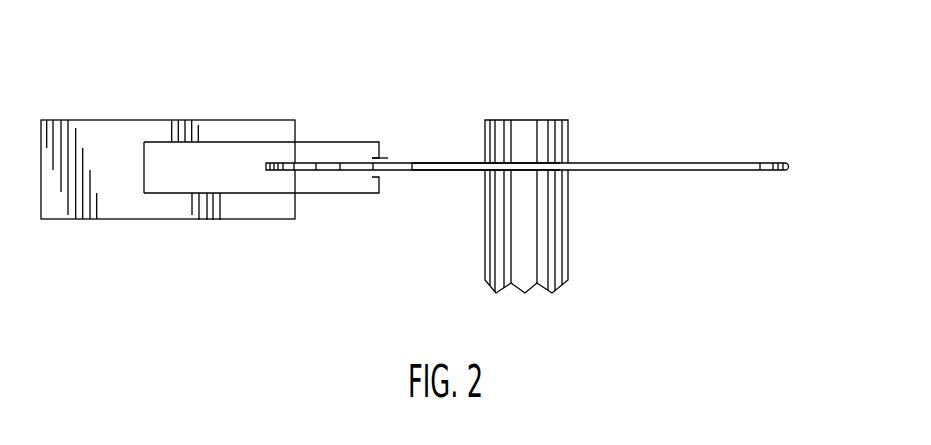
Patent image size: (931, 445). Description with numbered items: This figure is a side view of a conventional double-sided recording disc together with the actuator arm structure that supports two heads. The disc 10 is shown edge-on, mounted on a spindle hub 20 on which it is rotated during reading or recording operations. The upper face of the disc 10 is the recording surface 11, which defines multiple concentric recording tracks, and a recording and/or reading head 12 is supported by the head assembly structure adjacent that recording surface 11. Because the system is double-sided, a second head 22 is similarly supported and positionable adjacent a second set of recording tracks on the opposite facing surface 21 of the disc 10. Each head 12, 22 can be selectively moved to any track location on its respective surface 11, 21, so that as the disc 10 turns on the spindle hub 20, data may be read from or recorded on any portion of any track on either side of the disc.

The disc 10 is at (554, 169).
The recording surface 11 is at (427, 163).
The recording and/or reading head 12 is at (388, 158).
The spindle hub 20 is at (525, 120).
The opposite facing surface 21 is at (427, 171).
The second head 22 is at (388, 177).